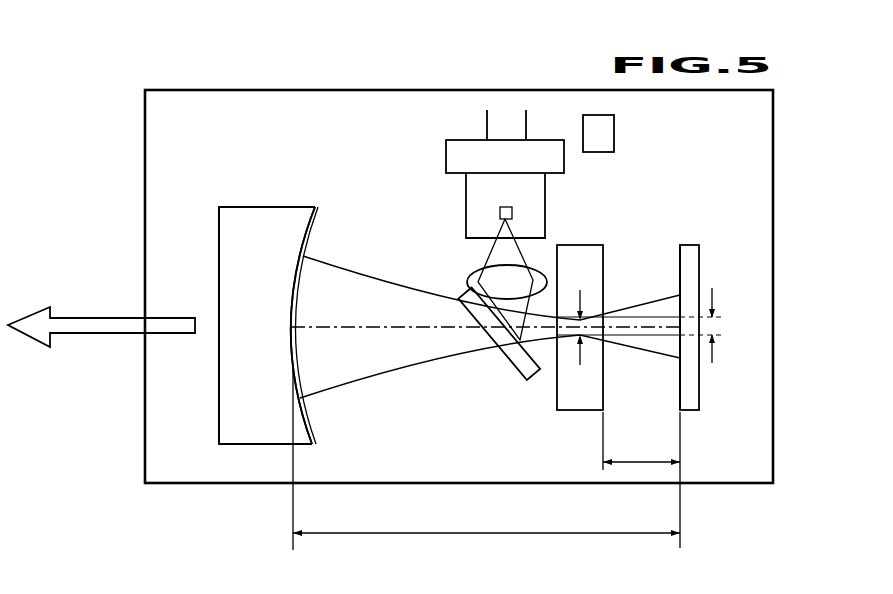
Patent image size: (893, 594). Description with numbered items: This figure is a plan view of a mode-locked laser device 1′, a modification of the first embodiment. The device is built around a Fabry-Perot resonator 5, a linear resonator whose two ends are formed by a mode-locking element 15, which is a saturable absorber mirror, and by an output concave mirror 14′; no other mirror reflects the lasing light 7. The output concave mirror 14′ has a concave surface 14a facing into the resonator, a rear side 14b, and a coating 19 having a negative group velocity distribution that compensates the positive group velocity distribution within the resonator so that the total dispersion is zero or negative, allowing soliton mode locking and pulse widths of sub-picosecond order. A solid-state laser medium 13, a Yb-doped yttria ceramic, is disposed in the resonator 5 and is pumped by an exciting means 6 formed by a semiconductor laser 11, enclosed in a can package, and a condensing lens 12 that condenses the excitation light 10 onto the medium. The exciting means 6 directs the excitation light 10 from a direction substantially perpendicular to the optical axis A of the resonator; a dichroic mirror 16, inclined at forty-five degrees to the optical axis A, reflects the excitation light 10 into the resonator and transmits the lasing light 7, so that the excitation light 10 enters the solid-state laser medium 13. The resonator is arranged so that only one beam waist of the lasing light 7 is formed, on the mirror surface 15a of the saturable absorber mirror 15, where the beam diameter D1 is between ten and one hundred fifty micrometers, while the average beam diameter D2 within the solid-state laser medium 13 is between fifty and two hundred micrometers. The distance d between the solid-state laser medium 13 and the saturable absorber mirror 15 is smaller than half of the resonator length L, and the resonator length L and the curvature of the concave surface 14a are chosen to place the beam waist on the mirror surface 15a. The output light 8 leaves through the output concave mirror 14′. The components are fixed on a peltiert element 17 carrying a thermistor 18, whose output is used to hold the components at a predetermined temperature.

The mode-locked laser device 1′ is at (101, 59).
The Fabry-Perot resonator 5 is at (331, 173).
The exciting means 6 is at (418, 136).
The lasing light 7 is at (387, 372).
The output light 8 is at (85, 334).
The excitation light 10 is at (522, 260).
The semiconductor laser 11 is at (500, 212).
The condensing lens 12 is at (475, 278).
The solid-state laser medium 13 is at (593, 245).
The output concave mirror 14′ is at (240, 207).
The concave surface 14a is at (308, 412).
The mirror rear side 14b is at (219, 395).
The mode-locking element 15 is at (692, 410).
The mirror surface 15a is at (680, 262).
The dichroic mirror 16 is at (510, 368).
The peltiert element 17 is at (763, 167).
The thermistor 18 is at (614, 133).
The coating 19 is at (313, 432).
The optical axis A is at (318, 330).
The beam diameter D1 is at (734, 325).
The average beam diameter D2 is at (577, 353).
The distance d is at (641, 480).
The resonator length L is at (486, 459).